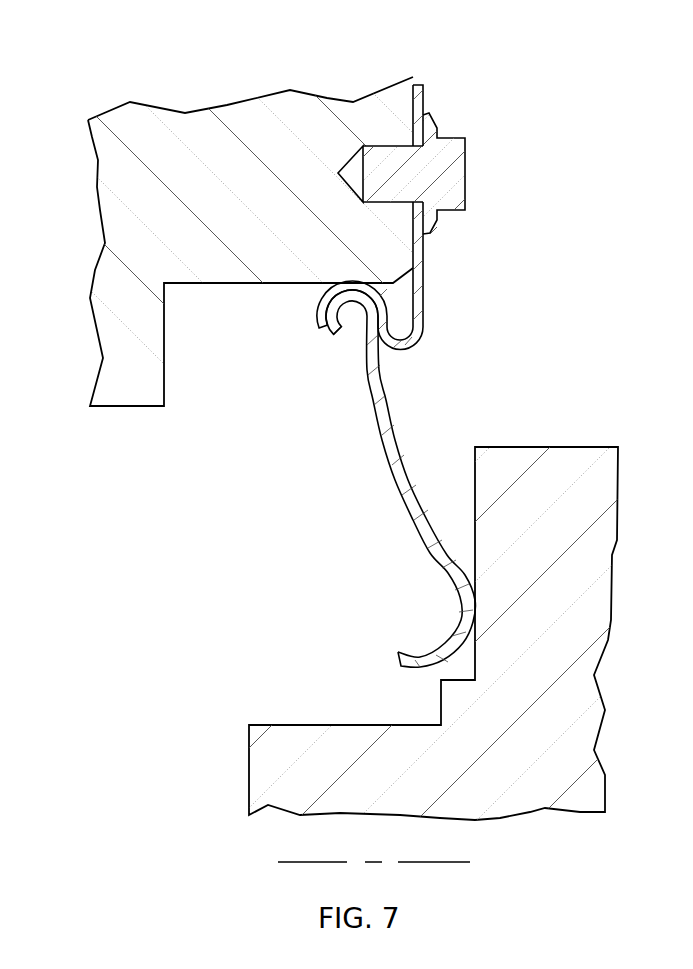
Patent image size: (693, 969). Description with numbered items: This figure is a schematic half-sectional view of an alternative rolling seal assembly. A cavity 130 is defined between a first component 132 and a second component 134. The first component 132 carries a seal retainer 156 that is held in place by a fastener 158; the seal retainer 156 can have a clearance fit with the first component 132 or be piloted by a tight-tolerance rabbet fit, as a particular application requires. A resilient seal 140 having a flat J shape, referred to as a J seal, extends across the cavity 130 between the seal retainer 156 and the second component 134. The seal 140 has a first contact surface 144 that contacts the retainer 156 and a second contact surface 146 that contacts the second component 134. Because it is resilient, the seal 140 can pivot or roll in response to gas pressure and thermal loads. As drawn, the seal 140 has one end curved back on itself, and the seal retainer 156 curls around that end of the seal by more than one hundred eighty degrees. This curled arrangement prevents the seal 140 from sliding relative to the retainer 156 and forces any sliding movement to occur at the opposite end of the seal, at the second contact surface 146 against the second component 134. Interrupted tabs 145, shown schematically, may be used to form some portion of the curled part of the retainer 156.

The cavity 130 is at (313, 535).
The first component 132 is at (220, 276).
The second component 134 is at (305, 736).
The resilient seal 140 is at (365, 476).
The first contact surface 144 is at (319, 296).
The interrupted tabs 145 is at (322, 331).
The second contact surface 146 is at (473, 606).
The seal retainer 156 is at (424, 268).
The fastener 158 is at (465, 180).